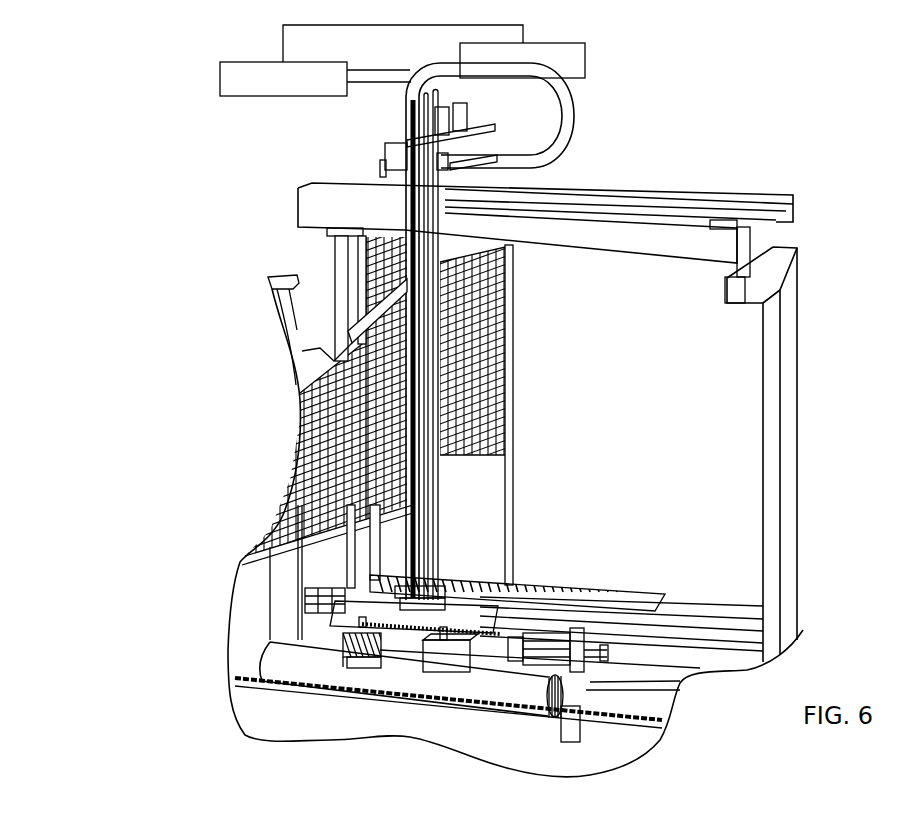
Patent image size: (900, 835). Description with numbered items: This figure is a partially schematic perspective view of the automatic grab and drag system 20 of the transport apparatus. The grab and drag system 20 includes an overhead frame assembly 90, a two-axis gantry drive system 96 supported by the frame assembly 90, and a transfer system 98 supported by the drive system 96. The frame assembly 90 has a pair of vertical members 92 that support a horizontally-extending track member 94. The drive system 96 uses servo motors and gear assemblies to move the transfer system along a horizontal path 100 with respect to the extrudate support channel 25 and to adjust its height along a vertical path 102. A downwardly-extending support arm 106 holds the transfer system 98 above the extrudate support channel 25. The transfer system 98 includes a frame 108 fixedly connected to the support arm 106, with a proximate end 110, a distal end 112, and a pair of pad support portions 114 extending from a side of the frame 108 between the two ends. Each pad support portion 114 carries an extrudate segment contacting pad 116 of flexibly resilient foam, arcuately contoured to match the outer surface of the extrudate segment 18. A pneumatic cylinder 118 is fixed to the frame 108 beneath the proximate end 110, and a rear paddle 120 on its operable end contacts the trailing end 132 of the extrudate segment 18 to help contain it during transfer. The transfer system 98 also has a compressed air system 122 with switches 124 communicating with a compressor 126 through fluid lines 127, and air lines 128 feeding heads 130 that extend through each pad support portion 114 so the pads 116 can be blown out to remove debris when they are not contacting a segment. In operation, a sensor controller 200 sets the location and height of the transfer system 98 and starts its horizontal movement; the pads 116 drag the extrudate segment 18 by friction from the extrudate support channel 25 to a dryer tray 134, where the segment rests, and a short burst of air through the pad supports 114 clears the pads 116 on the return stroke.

The sensor controller 200 is at (220, 78).
The compressor 126 is at (585, 56).
The two-axis gantry drive system 96 is at (413, 65).
The fluid lines 127 is at (407, 200).
The horizontally-extending track member 94 is at (680, 240).
The horizontal path 100 is at (724, 170).
The grab and drag system 20 is at (645, 133).
The overhead frame assembly 90 is at (806, 350).
The vertical members 92 is at (790, 505).
The compressed air system 122 is at (328, 552).
The transfer system 98 is at (560, 548).
The vertical path 102 is at (456, 546).
The support arm 106 is at (470, 558).
The air lines 128 is at (408, 578).
The pneumatic cylinder 118 is at (560, 592).
The proximate end 110 is at (630, 602).
The frame 108 is at (561, 642).
The switches 124 is at (303, 610).
The distal end 112 is at (347, 640).
The pad support portions 114 is at (347, 650).
The heads 130 is at (377, 667).
The extrudate segment contacting pad 116 is at (357, 657).
The extrudate segment 18 is at (430, 688).
The dryer tray 134 is at (473, 723).
The trailing end 132 is at (572, 708).
The rear paddle 120 is at (598, 683).
The extrudate support channel 25 is at (647, 735).